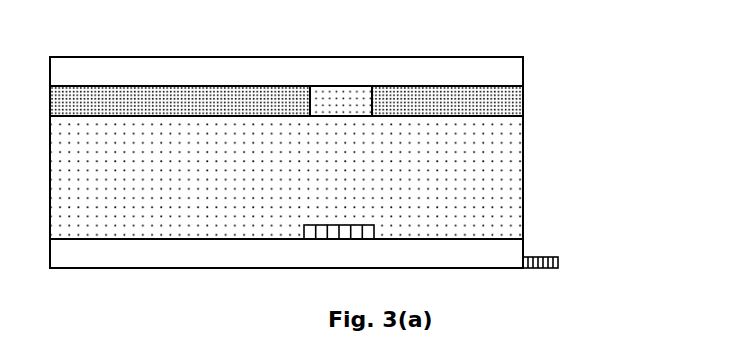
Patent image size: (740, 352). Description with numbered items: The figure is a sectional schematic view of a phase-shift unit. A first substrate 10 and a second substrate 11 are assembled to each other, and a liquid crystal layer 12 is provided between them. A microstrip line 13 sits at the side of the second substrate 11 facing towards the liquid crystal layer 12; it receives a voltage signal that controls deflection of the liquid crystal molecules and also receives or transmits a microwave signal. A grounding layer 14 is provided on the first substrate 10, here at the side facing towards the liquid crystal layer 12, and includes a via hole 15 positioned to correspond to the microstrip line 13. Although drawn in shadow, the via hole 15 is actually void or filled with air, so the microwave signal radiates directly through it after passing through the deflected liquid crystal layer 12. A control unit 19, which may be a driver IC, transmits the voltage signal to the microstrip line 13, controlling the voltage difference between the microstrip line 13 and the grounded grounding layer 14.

The first substrate 10 is at (523, 74).
The grounding layer 14 is at (523, 103).
The via hole 15 is at (332, 98).
The liquid crystal layer 12 is at (523, 173).
The microstrip line 13 is at (374, 231).
The second substrate 11 is at (523, 251).
The control unit 19 is at (558, 257).